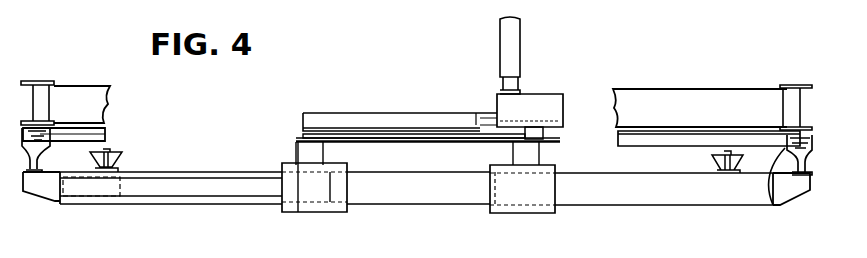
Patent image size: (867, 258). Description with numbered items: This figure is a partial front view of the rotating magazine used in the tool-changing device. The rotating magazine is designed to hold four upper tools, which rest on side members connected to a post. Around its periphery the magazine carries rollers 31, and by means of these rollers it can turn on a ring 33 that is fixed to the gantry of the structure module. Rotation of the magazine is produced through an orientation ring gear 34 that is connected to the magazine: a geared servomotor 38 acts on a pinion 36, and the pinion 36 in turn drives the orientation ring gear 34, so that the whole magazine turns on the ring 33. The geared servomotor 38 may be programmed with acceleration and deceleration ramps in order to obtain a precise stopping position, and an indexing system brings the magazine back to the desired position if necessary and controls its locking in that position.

The rollers 31 is at (775, 206).
The ring 33 is at (698, 140).
The orientation ring gear 34 is at (366, 137).
The pinion 36 is at (553, 135).
The geared servomotor 38 is at (532, 88).